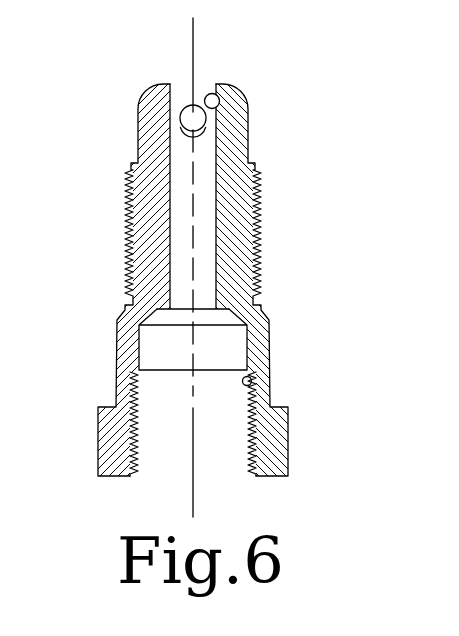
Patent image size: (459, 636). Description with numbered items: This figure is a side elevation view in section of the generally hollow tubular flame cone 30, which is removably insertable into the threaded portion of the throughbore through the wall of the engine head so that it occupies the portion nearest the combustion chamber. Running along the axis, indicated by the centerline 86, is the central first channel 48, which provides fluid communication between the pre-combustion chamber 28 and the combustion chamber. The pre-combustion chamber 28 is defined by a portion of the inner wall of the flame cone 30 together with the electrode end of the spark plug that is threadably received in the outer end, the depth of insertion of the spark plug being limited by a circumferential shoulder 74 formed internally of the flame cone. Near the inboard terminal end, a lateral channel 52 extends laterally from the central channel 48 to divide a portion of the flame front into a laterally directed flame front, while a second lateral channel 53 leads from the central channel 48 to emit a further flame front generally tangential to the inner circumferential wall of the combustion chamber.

The flame cone 30 is at (272, 264).
The central first channel 48 is at (203, 188).
The pre-combustion chamber 28 is at (160, 351).
The circumferential shoulder 74 is at (263, 393).
The centerline axis 86 is at (193, 43).
The lateral channel 52 is at (180, 119).
The second lateral channel 53 is at (206, 101).